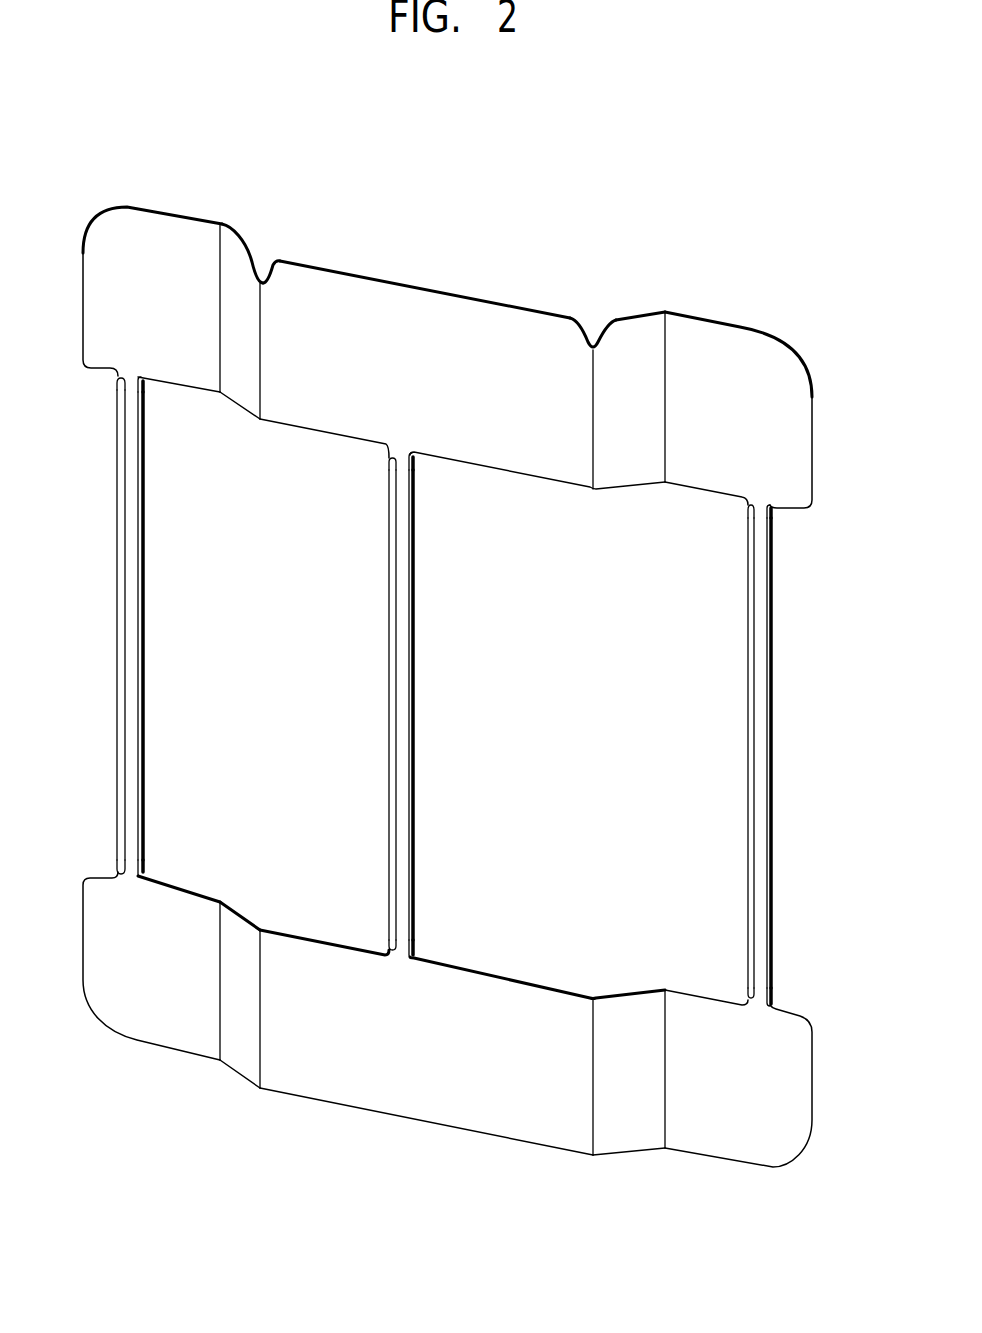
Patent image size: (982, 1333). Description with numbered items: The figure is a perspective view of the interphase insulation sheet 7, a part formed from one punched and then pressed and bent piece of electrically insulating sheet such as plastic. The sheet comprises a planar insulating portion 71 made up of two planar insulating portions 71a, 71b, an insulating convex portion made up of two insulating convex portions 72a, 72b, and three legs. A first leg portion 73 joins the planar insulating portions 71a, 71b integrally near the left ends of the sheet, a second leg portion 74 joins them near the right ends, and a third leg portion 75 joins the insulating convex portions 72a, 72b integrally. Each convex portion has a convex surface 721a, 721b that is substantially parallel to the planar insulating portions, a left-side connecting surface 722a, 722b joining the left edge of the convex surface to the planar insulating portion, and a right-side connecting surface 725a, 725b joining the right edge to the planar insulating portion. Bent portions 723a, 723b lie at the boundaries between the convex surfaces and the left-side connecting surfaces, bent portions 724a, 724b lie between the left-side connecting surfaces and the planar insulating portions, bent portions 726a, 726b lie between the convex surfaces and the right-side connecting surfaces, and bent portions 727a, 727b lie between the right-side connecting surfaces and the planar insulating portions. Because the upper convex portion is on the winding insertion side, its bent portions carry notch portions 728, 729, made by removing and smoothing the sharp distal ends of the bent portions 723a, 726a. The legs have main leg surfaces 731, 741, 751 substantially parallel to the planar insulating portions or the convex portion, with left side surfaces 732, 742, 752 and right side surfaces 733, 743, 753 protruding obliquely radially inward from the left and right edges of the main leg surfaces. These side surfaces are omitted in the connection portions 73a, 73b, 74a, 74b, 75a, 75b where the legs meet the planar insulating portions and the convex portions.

The interphase insulation sheet 7 is at (548, 182).
The planar insulating portion 71 is at (447, 684).
The planar insulating portion 71a is at (138, 212).
The planar insulating portion 71b is at (144, 1022).
The insulating convex portion 72a is at (402, 275).
The insulating convex portion 72b is at (408, 1080).
The convex surface 721a is at (447, 290).
The convex surface 721b is at (453, 1110).
The left-side connecting surface 722a is at (231, 242).
The left-side connecting surface 722b is at (238, 1053).
The bent portion 723a is at (257, 404).
The bent portion 723b is at (250, 925).
The bent portion 724a is at (216, 365).
The bent portion 724b is at (218, 983).
The right-side connecting surface 725a is at (648, 318).
The right-side connecting surface 725b is at (650, 1130).
The bent portion 726a is at (600, 480).
The bent portion 726b is at (597, 1013).
The bent portion 727a is at (665, 450).
The bent portion 727b is at (668, 1043).
The notch portion 728 is at (260, 263).
The notch portion 729 is at (595, 347).
The first leg portion 73 is at (112, 640).
The connection portion 73a is at (115, 384).
The connection portion 73b is at (113, 870).
The main leg surface 731 is at (131, 677).
The left side surface 732 is at (122, 700).
The right side surface 733 is at (137, 733).
The second leg portion 74 is at (742, 718).
The connection portion 74a is at (778, 510).
The connection portion 74b is at (780, 1005).
The main leg surface 741 is at (756, 748).
The left side surface 742 is at (751, 772).
The right side surface 743 is at (768, 805).
The third leg portion 75 is at (382, 660).
The connection portion 75a is at (415, 457).
The connection portion 75b is at (418, 948).
The main leg surface 751 is at (398, 690).
The left side surface 752 is at (392, 715).
The right side surface 753 is at (410, 750).